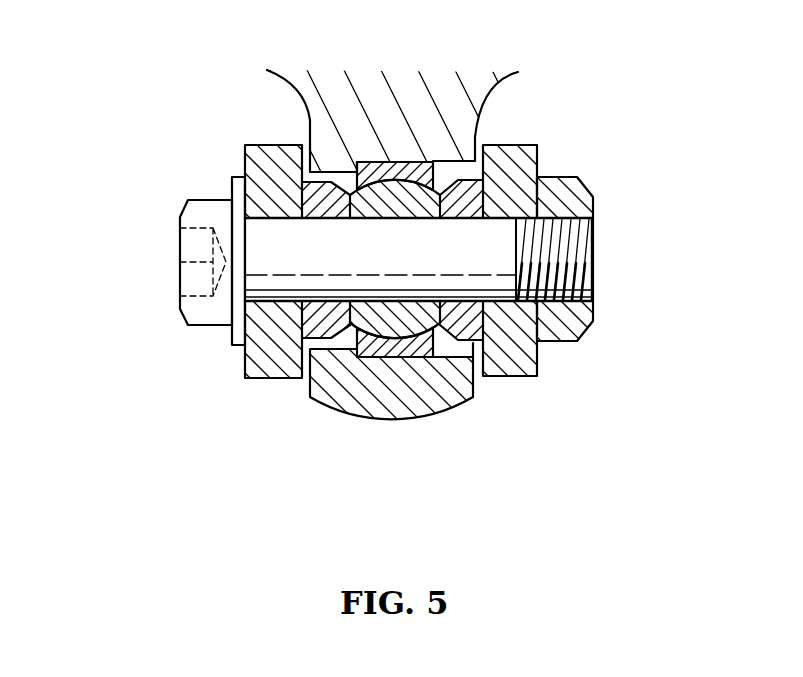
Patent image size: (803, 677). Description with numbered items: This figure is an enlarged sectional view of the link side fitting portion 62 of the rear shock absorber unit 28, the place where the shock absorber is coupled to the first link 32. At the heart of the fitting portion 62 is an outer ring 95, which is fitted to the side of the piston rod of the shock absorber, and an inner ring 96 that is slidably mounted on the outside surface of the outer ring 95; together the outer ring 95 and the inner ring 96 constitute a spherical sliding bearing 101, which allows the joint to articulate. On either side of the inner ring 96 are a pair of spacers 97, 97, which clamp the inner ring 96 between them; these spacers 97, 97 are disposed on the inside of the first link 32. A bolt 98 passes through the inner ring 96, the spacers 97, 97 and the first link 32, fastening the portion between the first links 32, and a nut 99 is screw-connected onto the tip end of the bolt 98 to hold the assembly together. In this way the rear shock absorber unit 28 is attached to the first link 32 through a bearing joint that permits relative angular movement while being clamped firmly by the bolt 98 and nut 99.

The rear shock absorber unit 28 is at (264, 82).
The first link 32 is at (240, 358).
The link side fitting portion 62 is at (300, 423).
The outer ring 95 is at (394, 348).
The inner ring 96 is at (425, 172).
The spacer 97 is at (348, 338).
The bolt 98 is at (178, 242).
The nut 99 is at (585, 193).
The spherical sliding bearing 101 is at (381, 376).